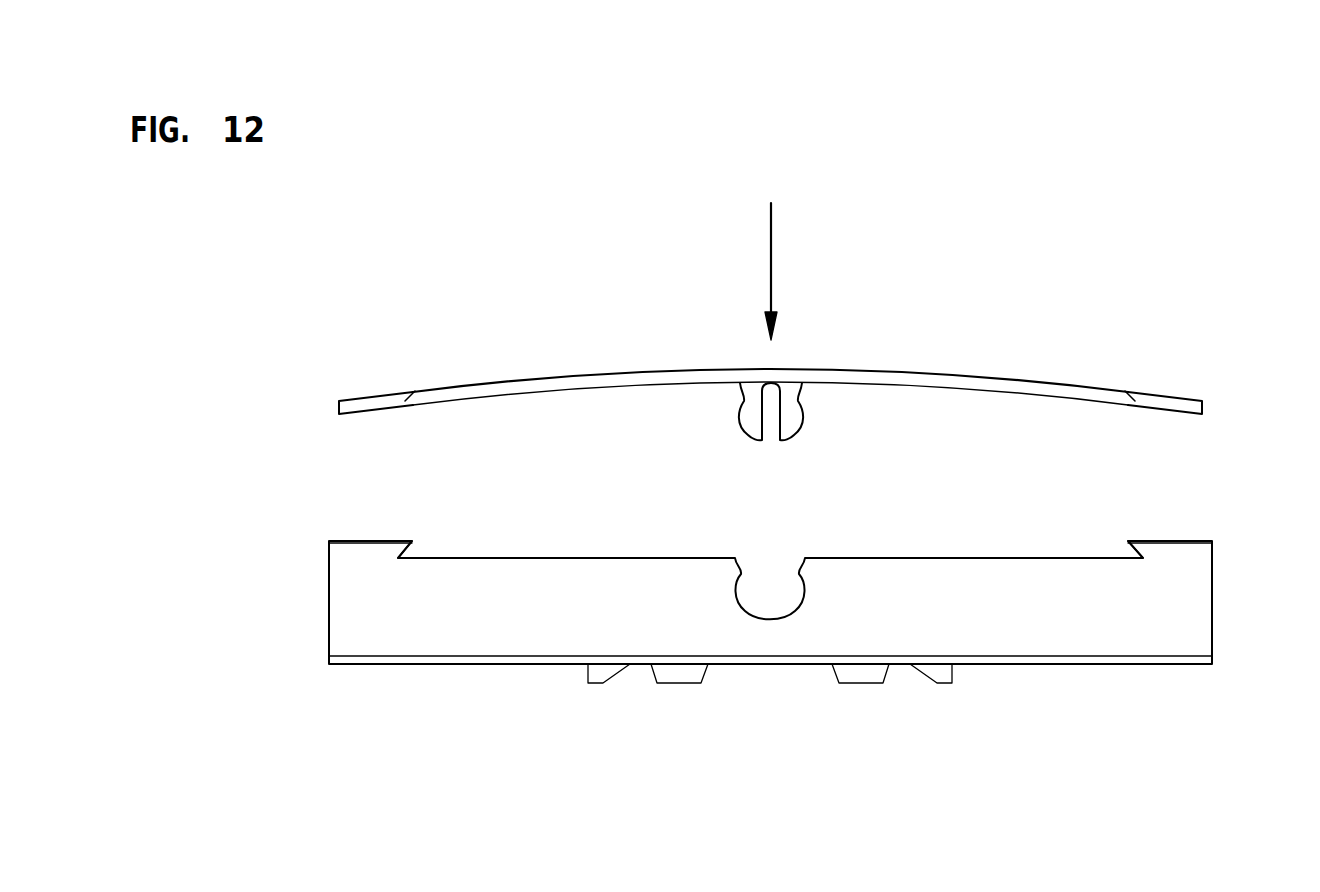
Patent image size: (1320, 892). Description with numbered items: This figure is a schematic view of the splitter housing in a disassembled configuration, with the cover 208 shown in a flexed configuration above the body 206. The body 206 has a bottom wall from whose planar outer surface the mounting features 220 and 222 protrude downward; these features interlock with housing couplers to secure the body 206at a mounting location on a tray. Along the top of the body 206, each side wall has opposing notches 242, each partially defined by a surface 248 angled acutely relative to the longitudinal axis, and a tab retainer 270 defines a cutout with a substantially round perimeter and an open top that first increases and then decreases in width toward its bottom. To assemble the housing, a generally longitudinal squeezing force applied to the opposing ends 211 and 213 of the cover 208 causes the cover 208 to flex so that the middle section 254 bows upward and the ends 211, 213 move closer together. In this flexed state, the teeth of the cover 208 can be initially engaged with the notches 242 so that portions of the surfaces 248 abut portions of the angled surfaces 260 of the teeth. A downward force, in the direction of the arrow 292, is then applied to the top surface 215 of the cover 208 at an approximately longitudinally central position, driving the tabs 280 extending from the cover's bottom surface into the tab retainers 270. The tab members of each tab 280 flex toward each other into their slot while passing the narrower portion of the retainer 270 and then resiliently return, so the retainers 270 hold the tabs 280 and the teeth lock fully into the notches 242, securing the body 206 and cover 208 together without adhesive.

The body 206 is at (346, 602).
The cover 208 is at (998, 383).
The bottom / opposing end of cover 211 is at (340, 408).
The top / opposing end of cover 213 is at (1203, 407).
The top surface of cover 215 is at (598, 375).
The mounting feature 220 is at (600, 672).
The mounting feature 222 is at (681, 674).
The notch 242 is at (400, 556).
The angled surface 248 is at (400, 556).
The second middle section 254 is at (701, 370).
The angled surface of tooth 260 is at (408, 397).
The tab retainer 270 is at (738, 590).
The tab 280 is at (817, 438).
The arrow 292 is at (773, 238).